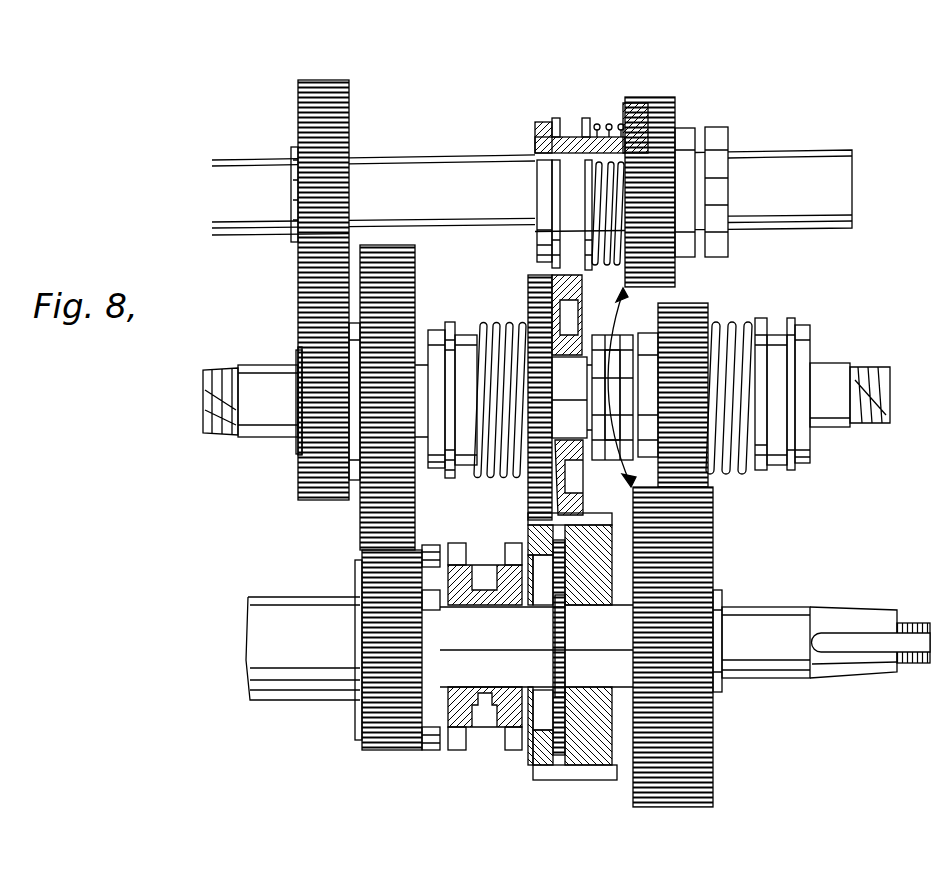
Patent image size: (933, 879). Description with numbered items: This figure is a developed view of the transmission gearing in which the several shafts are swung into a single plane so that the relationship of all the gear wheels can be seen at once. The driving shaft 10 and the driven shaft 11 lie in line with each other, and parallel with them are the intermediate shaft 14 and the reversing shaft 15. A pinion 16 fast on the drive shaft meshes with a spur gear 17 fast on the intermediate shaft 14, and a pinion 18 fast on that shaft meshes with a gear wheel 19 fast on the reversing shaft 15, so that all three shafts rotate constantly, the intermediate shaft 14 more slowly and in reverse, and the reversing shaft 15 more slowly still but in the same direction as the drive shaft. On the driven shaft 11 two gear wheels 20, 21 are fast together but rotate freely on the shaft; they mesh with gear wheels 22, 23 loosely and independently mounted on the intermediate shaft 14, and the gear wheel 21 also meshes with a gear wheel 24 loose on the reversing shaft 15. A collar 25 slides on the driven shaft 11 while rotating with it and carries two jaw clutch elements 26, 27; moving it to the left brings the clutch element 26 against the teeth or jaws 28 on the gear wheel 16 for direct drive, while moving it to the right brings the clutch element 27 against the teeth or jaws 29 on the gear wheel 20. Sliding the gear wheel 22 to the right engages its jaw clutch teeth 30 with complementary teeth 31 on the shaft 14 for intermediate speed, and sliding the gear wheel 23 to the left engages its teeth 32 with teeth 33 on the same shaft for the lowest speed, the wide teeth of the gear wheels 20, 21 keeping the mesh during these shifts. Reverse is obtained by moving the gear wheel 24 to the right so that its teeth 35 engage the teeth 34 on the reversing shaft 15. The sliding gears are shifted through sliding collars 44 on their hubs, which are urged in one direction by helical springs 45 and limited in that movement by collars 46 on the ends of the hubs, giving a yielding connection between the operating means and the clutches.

The driving shaft 10 is at (405, 648).
The driven shaft 11 is at (826, 642).
The intermediate shaft 14 is at (546, 398).
The reversing shaft 15 is at (532, 192).
The pinion 16 is at (376, 748).
The spur gear 17 is at (415, 488).
The pinion 18 is at (298, 472).
The gear wheel 19 is at (349, 122).
The gear wheel 20 is at (555, 780).
The gear wheel 21 is at (716, 740).
The gear wheel 22 is at (526, 283).
The gear wheel 23 is at (710, 304).
The gear wheel 24 is at (650, 100).
The collar 25 is at (491, 700).
The jaw clutch element 26 is at (458, 548).
The jaw clutch element 27 is at (510, 545).
The teeth or jaws 28 is at (436, 752).
The teeth or jaws 29 is at (580, 639).
The jaw clutch teeth 30 is at (578, 320).
The jaw clutch teeth 31 is at (600, 338).
The jaw clutch teeth 32 is at (650, 335).
The jaw clutch teeth 33 is at (621, 340).
The teeth 34 is at (716, 135).
The teeth 35 is at (688, 128).
The sliding collar 44 is at (571, 130).
The helical spring 45 is at (610, 122).
The collar 46 is at (535, 127).